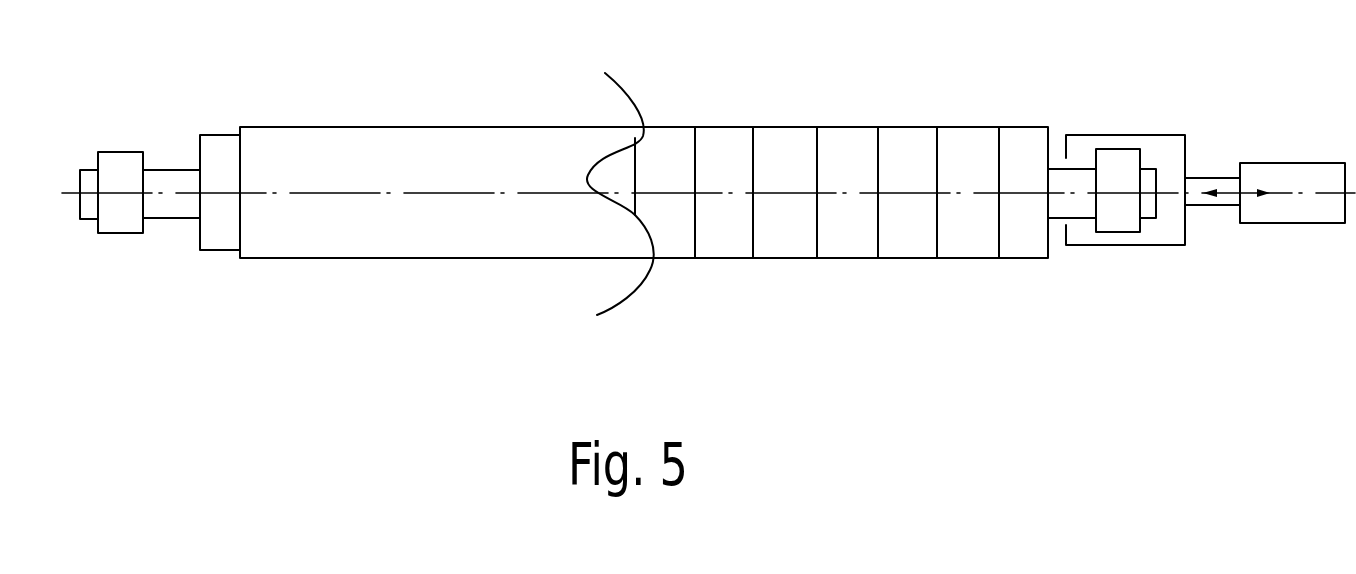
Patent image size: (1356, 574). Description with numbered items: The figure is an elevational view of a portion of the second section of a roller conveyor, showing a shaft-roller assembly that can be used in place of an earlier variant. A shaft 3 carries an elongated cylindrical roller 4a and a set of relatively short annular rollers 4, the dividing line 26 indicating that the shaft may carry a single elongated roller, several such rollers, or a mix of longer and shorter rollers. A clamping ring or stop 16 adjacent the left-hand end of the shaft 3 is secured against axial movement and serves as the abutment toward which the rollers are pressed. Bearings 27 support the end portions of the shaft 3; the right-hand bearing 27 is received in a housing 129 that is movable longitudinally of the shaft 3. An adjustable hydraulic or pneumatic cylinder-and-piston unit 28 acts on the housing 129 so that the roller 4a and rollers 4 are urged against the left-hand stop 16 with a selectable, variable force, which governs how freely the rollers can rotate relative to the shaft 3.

The shaft 3 is at (177, 213).
The annular rollers 4 is at (847, 231).
The elongated cylindrical roller 4a is at (355, 260).
The clamping ring or stop 16 is at (220, 137).
The dividing line 26 is at (613, 175).
The bearing 27 is at (113, 233).
The cylinder-and-piston unit 28 is at (1292, 225).
The housing 129 is at (1147, 135).